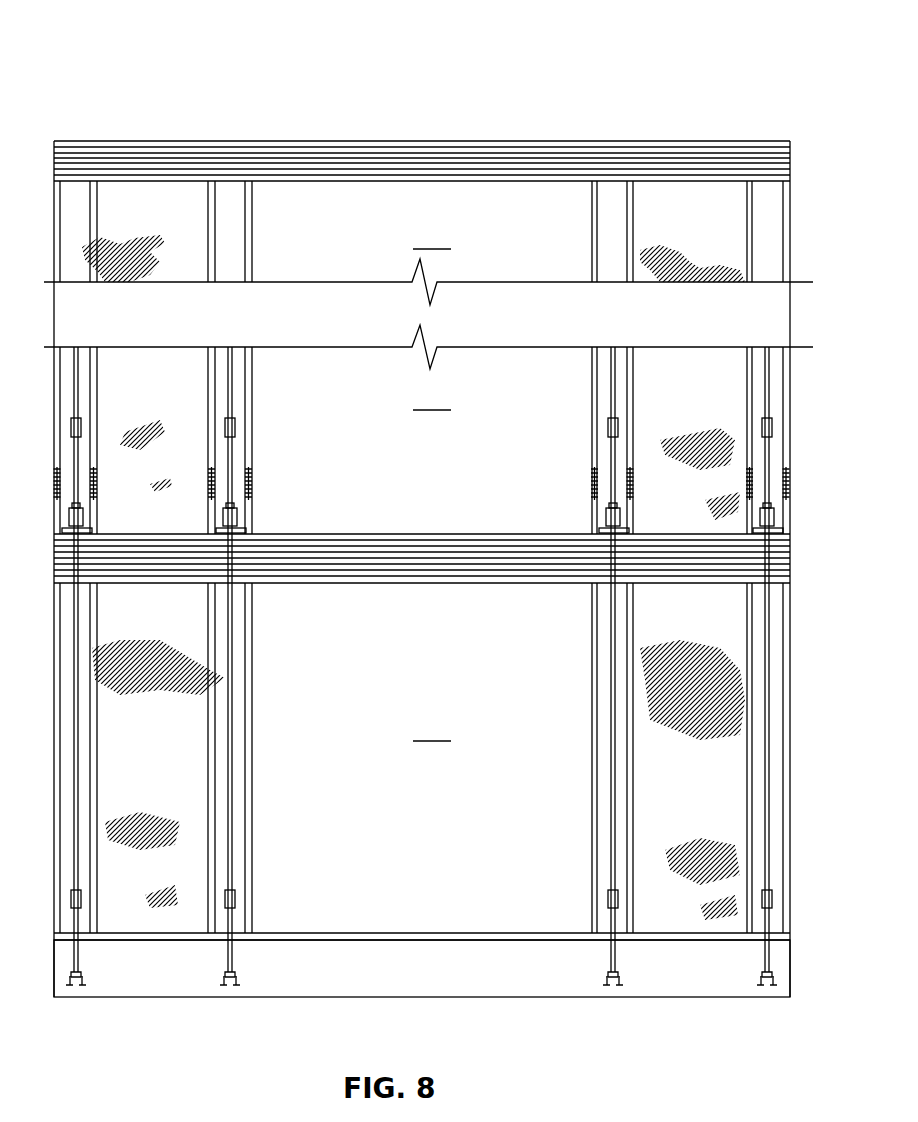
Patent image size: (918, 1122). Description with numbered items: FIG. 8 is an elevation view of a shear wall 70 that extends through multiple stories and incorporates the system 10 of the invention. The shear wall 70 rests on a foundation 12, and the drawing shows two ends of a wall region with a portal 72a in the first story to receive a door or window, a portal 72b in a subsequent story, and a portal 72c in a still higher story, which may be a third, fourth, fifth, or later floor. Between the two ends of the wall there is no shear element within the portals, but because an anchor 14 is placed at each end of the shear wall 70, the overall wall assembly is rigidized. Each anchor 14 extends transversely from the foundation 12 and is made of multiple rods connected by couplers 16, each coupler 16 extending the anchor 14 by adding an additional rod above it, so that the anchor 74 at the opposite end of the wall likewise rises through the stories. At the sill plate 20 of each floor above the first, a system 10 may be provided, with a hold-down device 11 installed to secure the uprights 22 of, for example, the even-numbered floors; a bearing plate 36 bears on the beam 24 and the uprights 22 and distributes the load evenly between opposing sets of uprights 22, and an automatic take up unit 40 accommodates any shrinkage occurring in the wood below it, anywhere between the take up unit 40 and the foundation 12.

The system 10 is at (100, 48).
The hold-down device 11 is at (56, 478).
The foundation 12 is at (440, 978).
The anchor 14 is at (229, 818).
The coupler 16 is at (82, 427).
The sill plate 20 is at (252, 933).
The uprights 22 is at (790, 242).
The beam 24 is at (351, 141).
The bearing plate 36 is at (85, 531).
The automatic take up unit 40 is at (82, 515).
The shear wall 70 is at (178, 383).
The portal 72a is at (433, 730).
The portal 72b is at (434, 399).
The portal 72c is at (433, 238).
The anchor 74 is at (85, 980).